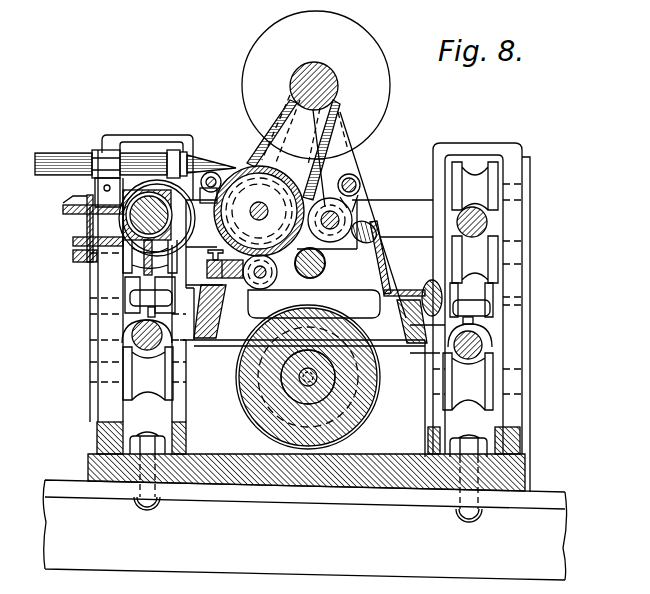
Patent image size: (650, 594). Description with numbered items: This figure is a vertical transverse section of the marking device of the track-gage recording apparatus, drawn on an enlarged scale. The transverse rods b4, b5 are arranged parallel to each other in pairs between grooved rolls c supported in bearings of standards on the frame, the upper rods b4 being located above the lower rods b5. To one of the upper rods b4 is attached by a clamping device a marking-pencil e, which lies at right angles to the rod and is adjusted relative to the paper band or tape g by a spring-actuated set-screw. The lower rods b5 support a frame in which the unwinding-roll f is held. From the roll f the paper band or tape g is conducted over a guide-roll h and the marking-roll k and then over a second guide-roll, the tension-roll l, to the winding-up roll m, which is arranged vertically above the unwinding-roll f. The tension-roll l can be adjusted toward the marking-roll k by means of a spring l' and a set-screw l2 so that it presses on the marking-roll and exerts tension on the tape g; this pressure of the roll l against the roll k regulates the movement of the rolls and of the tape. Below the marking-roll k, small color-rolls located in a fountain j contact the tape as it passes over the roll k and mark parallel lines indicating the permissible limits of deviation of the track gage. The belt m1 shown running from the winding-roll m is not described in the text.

The marking-pencil e is at (63, 156).
The transverse rods b4 is at (475, 234).
The transverse rods b5 is at (538, 343).
The grooved rolls c is at (310, 286).
The winding-up roll m is at (316, 85).
The driving belt m1 is at (263, 148).
The paper band or tape g is at (312, 132).
The marking-roll k is at (259, 211).
The tension-roll l is at (349, 210).
The spring l' is at (397, 258).
The set-screw l2 is at (420, 338).
The guide-roll h is at (327, 263).
The fountain j is at (247, 290).
The unwinding-roll f is at (300, 378).